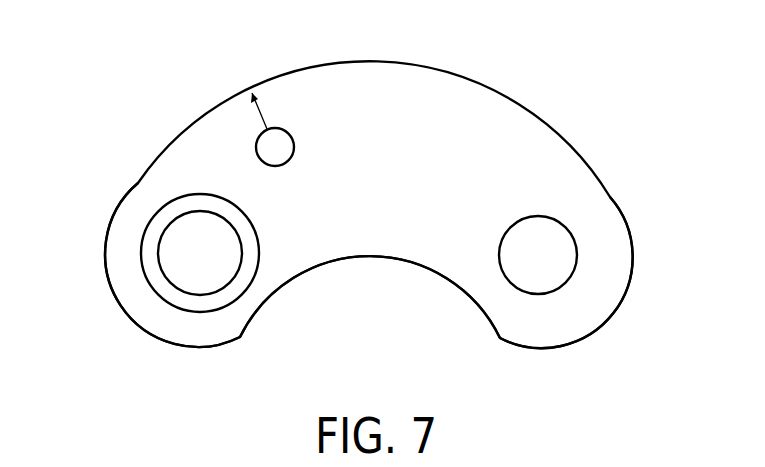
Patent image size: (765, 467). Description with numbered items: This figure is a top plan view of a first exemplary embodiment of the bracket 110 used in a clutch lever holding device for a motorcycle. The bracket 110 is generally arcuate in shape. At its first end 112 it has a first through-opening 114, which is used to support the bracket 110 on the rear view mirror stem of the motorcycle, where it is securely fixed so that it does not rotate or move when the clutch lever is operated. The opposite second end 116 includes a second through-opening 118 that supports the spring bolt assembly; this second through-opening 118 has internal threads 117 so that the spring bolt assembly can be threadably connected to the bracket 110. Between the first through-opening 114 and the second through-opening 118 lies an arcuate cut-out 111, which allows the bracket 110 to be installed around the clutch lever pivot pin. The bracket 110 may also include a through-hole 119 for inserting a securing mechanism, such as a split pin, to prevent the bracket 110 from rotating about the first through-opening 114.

The bracket 110 is at (147, 167).
The arcuate cut-out 111 is at (377, 257).
The first end 112 is at (620, 275).
The first through-opening 114 is at (562, 220).
The second end 116 is at (113, 298).
The internal threads 117 is at (233, 225).
The second through-opening 118 is at (217, 280).
The through-hole 119 is at (290, 128).